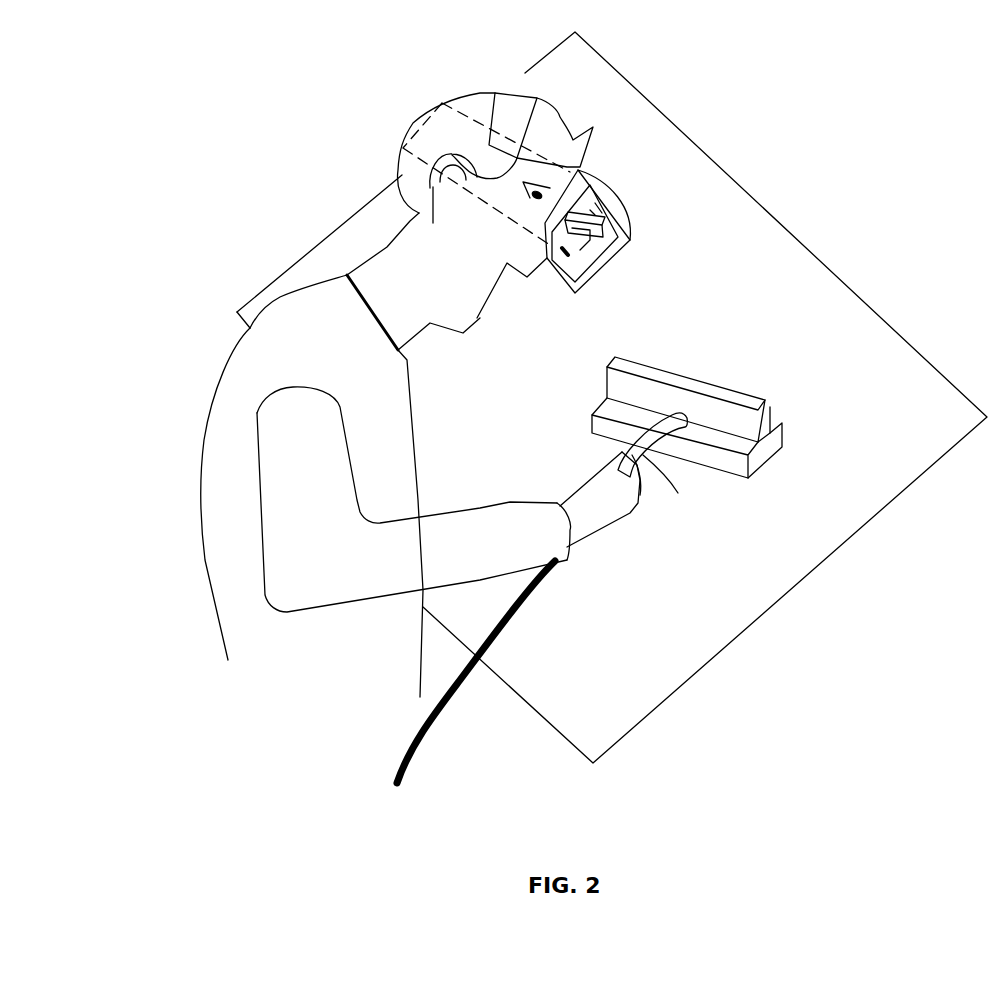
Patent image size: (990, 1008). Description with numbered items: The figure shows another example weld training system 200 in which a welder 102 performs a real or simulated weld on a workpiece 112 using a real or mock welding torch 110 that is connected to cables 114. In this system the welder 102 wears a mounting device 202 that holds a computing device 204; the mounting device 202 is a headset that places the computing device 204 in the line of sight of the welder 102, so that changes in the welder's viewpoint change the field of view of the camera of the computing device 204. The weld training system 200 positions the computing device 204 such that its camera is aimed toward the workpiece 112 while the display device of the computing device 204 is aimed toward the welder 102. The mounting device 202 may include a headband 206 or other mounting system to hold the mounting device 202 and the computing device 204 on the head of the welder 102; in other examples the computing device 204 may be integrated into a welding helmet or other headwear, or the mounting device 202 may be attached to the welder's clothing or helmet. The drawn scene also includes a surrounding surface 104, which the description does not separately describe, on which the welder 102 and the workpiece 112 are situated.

The weld training system 200 is at (150, 61).
The welder 102 is at (222, 376).
The physical environment / floor 104 is at (733, 182).
The welding torch 110 is at (643, 458).
The workpiece 112 is at (742, 383).
The cables 114 is at (416, 751).
The mounting device 202 is at (604, 196).
The computing device 204 is at (607, 262).
The headband 206 is at (405, 144).